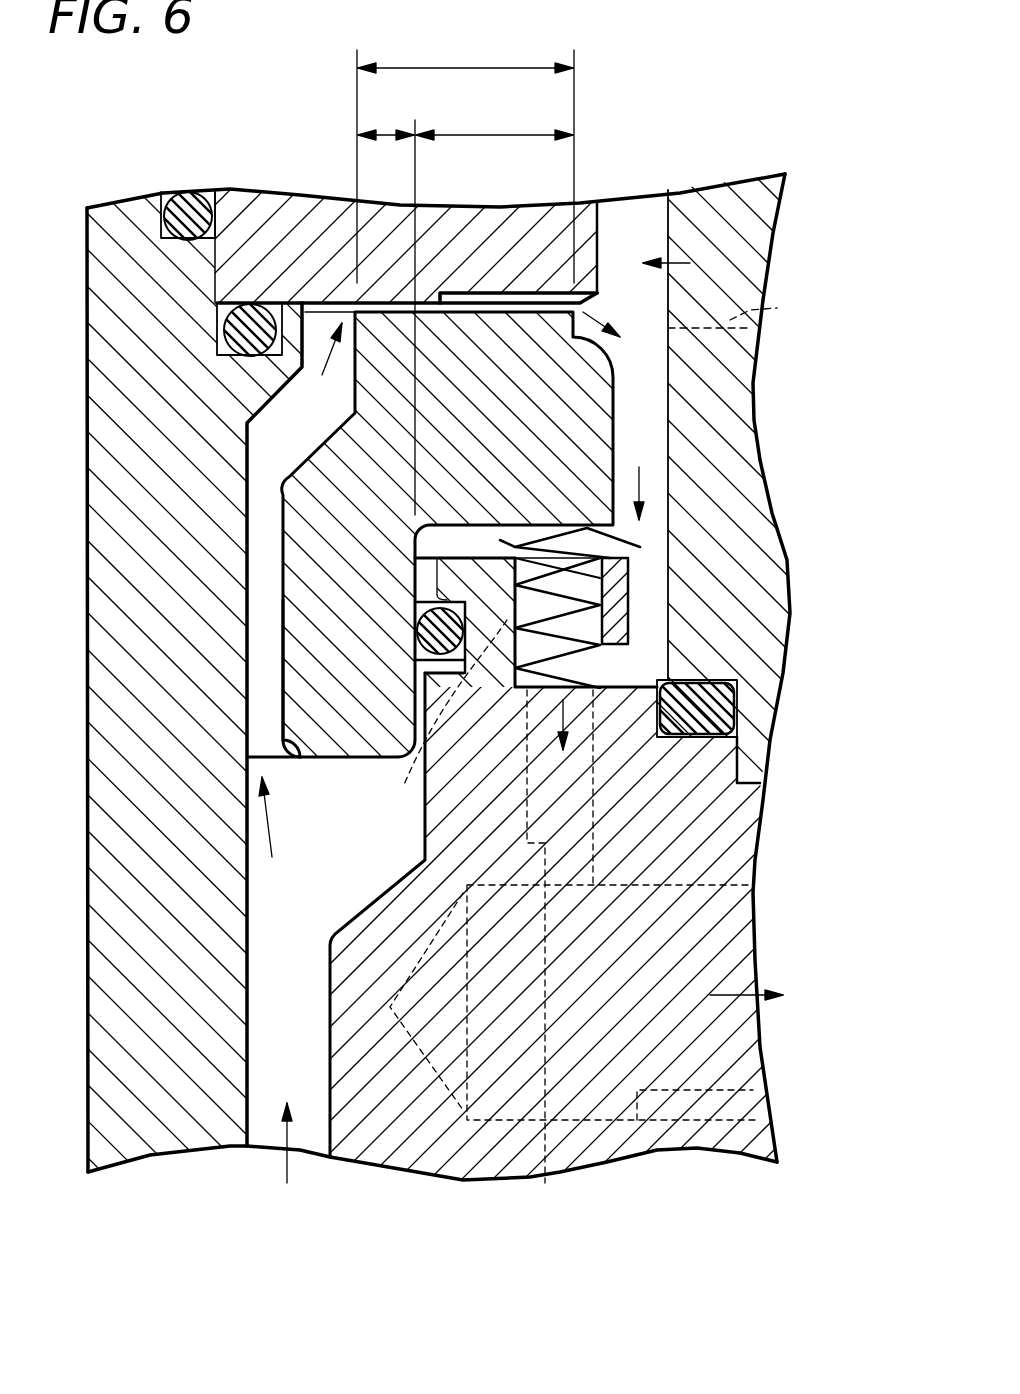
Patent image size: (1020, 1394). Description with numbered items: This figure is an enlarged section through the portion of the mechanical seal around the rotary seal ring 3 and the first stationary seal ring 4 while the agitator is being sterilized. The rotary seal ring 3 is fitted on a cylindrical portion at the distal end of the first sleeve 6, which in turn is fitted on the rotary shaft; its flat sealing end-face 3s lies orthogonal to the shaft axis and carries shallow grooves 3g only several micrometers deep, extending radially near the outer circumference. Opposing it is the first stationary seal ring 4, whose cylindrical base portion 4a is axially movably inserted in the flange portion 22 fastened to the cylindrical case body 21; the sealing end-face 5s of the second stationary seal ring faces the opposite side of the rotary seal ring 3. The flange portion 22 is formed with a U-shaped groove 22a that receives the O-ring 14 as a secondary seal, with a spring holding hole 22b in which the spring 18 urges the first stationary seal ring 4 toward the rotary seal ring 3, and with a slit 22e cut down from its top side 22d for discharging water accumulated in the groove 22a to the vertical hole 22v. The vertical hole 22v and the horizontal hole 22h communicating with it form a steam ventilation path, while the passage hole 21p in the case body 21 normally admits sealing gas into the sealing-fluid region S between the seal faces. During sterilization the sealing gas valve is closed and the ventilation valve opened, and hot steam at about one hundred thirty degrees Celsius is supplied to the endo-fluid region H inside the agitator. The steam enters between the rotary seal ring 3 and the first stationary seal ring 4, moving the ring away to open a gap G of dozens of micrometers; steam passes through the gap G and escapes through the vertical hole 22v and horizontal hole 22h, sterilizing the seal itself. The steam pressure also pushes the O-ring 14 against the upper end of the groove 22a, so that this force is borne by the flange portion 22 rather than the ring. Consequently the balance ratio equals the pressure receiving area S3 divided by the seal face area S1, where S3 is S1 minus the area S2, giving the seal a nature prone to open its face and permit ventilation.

The rotary seal ring 3 is at (483, 270).
The sealing end-face 3s is at (400, 310).
The shallow grooves 3g is at (573, 340).
The first stationary seal ring 4 is at (510, 463).
The cylindrical base portion 4a is at (353, 667).
The sealing end-face 5s is at (425, 290).
The first sleeve 6 is at (167, 1088).
The O-ring 14 is at (430, 627).
The spring 18 is at (560, 607).
The case body 21 is at (555, 437).
The passage hole 21p is at (753, 310).
The flange portion 22 is at (510, 874).
The U-shaped groove 22a is at (437, 673).
The spring holding hole 22b is at (575, 687).
The top side 22d is at (477, 555).
The slit 22e is at (410, 760).
The horizontal hole 22h is at (753, 1088).
The vertical hole 22v is at (559, 960).
The sealing-fluid region S is at (690, 263).
The seal face area S1 is at (465, 158).
The area S2 is at (494, 118).
The pressure receiving area S3 is at (386, 305).
The gap G is at (347, 307).
The endo-fluid region H is at (295, 1235).